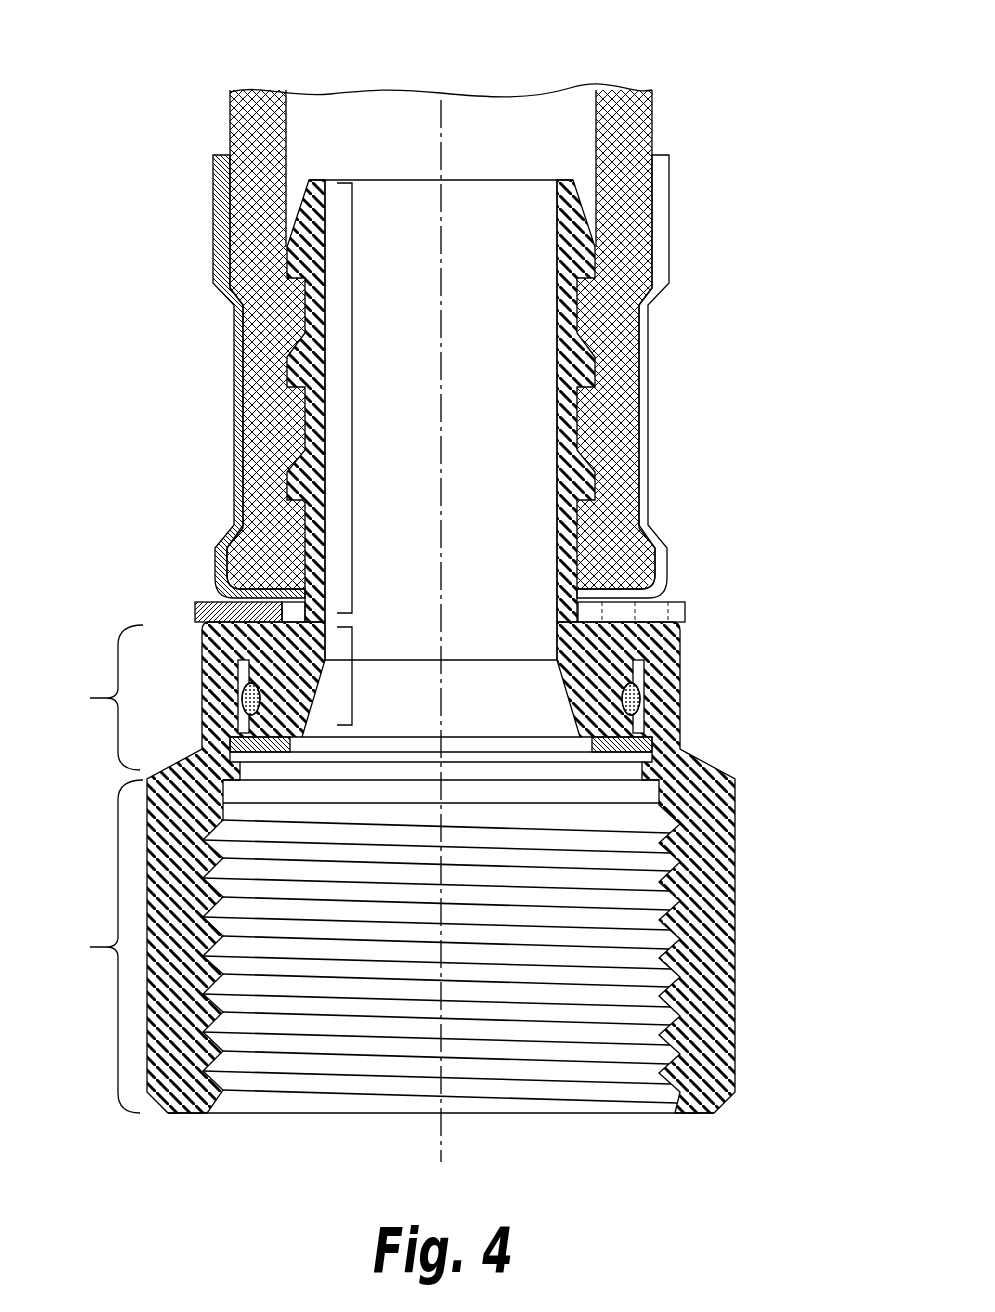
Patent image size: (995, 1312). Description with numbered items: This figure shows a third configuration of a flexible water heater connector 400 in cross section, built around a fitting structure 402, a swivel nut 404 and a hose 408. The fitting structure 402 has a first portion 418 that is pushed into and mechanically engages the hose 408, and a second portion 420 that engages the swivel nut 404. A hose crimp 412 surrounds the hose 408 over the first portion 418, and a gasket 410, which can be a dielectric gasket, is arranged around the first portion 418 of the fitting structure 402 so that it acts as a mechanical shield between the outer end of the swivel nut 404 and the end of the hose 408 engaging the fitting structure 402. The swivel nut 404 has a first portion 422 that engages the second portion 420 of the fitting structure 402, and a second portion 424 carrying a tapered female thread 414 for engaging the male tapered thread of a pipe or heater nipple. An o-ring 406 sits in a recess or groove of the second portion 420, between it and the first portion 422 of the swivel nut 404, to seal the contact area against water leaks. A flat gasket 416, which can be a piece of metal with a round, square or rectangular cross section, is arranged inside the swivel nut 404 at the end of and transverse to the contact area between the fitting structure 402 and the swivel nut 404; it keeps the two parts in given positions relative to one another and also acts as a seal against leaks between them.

The flexible water heater connector 400 is at (449, 588).
The fitting structure 402 is at (310, 427).
The swivel nut 404 is at (499, 899).
The o-ring 406 is at (240, 688).
The hose 408 is at (613, 417).
The gasket 410 is at (687, 610).
The hose crimp 412 is at (214, 240).
The tapered female thread 414 is at (673, 1003).
The flat gasket 416 is at (598, 745).
The first portion of the fitting structure 418 is at (352, 400).
The second portion of the fitting structure 420 is at (352, 680).
The first portion of the swivel nut 422 is at (95, 697).
The second portion of the swivel nut 424 is at (95, 946).